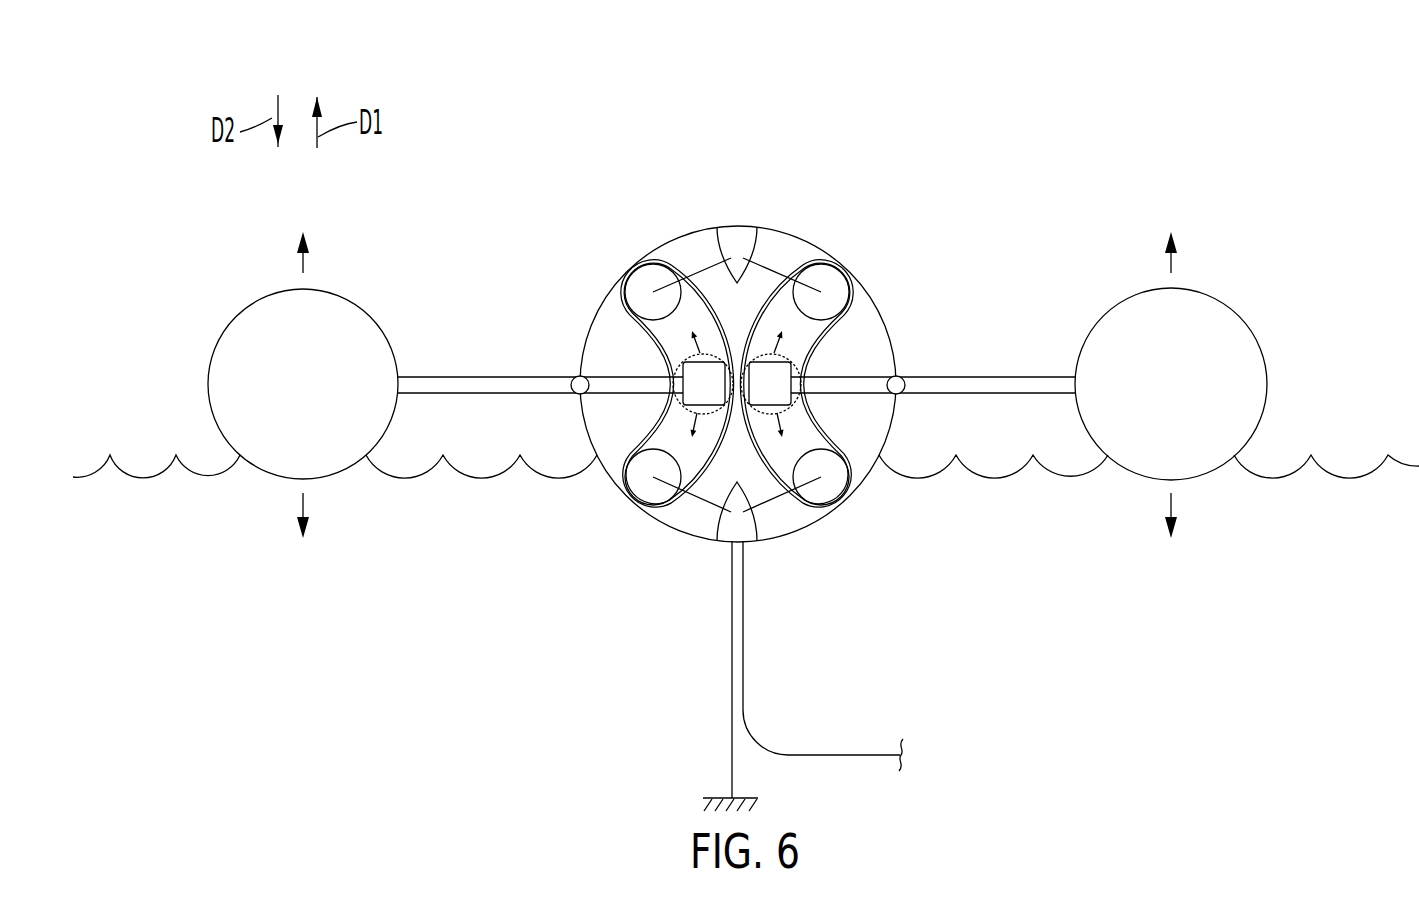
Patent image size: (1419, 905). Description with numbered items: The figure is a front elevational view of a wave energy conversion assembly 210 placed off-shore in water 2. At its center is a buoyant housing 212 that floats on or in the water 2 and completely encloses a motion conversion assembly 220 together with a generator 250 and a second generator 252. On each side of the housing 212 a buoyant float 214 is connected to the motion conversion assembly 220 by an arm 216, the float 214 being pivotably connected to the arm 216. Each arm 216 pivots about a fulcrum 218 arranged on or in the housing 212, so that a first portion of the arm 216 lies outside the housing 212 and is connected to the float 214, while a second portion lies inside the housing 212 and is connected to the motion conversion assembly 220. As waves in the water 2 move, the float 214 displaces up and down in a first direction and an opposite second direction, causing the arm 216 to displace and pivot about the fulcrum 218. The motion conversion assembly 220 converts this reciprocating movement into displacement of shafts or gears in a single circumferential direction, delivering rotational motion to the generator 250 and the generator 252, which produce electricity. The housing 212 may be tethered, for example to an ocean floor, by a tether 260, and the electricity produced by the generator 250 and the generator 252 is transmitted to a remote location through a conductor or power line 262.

The water 2 is at (475, 633).
The wave energy conversion assembly 210 is at (468, 108).
The housing 212 is at (670, 240).
The float 214 is at (288, 397).
The arm 216 is at (502, 380).
The fulcrum 218 is at (579, 394).
The motion conversion assembly 220 is at (638, 251).
The generator 250 is at (735, 240).
The generator 252 is at (749, 529).
The tether 260 is at (731, 623).
The power line 262 is at (744, 615).